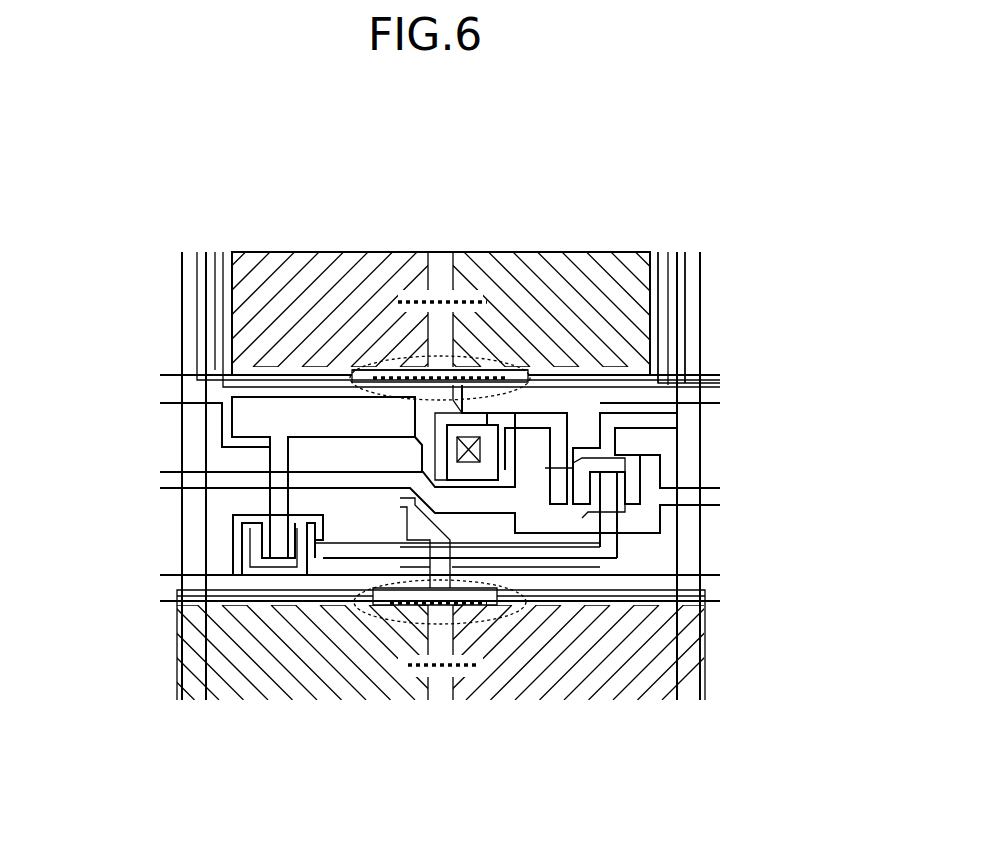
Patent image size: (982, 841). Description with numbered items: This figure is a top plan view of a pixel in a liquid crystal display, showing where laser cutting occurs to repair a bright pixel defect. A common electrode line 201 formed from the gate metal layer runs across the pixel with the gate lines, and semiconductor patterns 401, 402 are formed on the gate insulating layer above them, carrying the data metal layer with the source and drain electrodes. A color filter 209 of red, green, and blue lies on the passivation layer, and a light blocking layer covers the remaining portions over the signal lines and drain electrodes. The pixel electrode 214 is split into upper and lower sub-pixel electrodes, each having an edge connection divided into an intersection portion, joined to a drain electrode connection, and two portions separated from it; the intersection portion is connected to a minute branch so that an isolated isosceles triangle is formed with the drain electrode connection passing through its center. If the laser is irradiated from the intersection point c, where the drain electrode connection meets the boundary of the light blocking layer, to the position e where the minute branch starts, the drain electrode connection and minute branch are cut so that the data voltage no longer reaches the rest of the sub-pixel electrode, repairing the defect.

The connection electrode 214 is at (374, 330).
The position where the minute branch is started e is at (410, 302).
The intersection point c is at (488, 370).
The color filter 209 is at (554, 370).
The common electrode line 201 is at (616, 370).
The semiconductor pattern 401 is at (625, 462).
The semiconductor pattern 402 is at (250, 552).